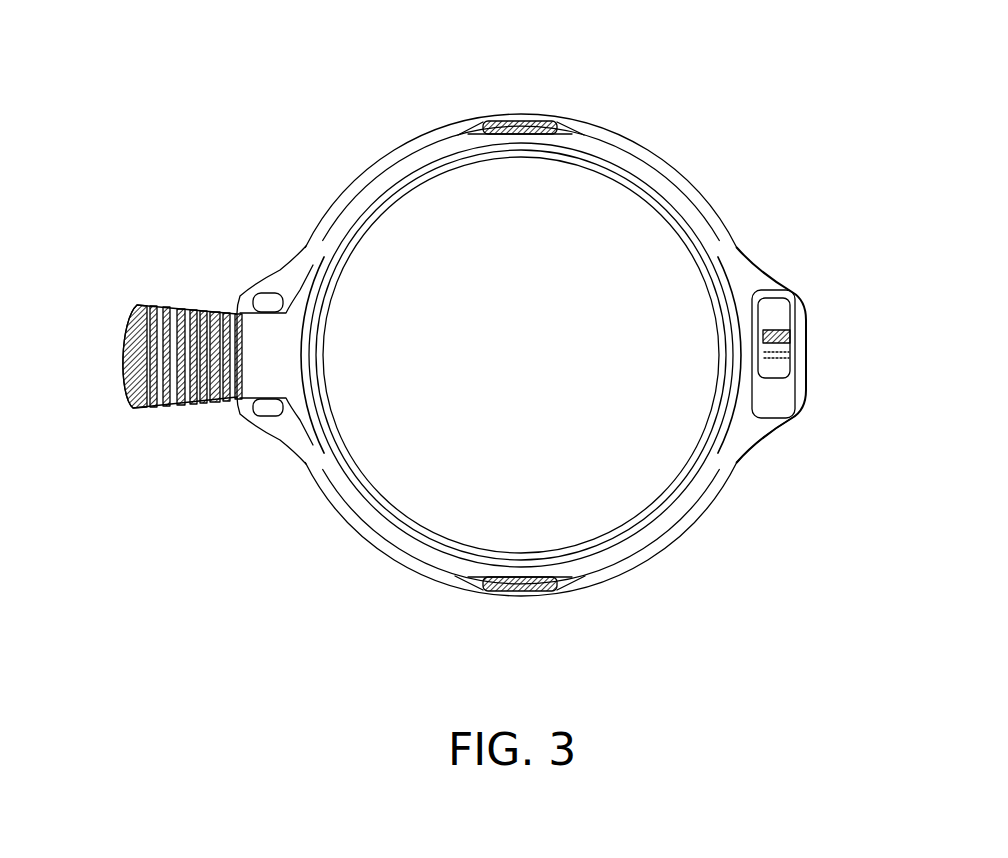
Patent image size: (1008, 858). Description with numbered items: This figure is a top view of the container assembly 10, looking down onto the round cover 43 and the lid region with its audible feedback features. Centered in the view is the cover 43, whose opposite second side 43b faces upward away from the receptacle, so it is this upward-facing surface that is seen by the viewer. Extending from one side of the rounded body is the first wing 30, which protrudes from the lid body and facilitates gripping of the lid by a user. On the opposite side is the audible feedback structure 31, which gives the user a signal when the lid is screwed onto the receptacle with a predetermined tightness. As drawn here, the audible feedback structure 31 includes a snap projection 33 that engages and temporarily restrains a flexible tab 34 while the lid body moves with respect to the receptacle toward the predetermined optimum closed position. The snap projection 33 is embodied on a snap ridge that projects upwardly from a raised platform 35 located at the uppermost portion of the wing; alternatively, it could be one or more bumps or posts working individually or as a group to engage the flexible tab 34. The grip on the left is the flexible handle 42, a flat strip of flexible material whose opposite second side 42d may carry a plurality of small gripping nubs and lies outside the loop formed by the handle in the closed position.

The container assembly 10 is at (344, 94).
The first wing 30 is at (809, 305).
The audible feedback structure 31 is at (781, 298).
The snap projection 33 is at (806, 330).
The flexible tab 34 is at (790, 352).
The raised platform 35 is at (806, 382).
The flexible handle 42 is at (176, 325).
The second side 42d is at (120, 345).
The cover 43 is at (538, 371).
The second side 43b is at (610, 222).